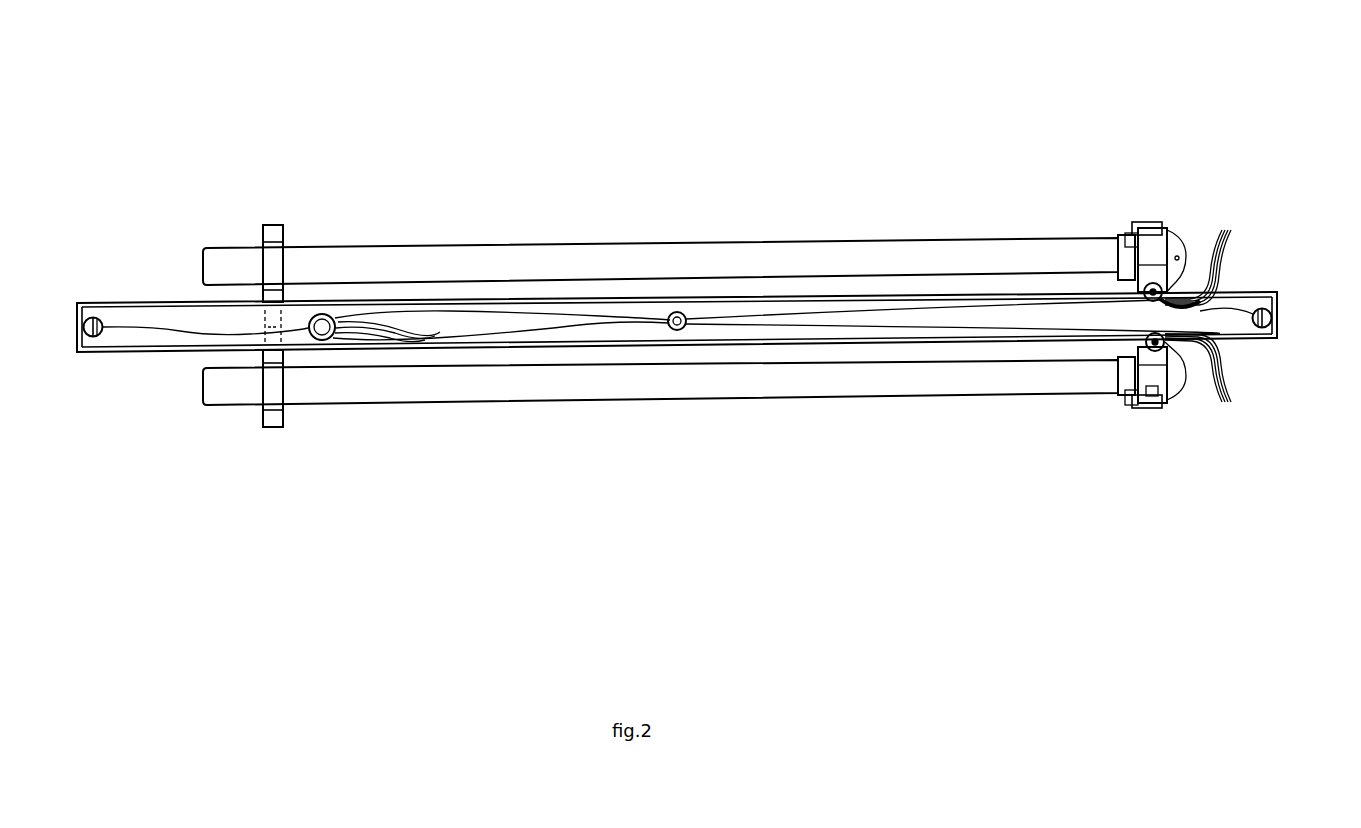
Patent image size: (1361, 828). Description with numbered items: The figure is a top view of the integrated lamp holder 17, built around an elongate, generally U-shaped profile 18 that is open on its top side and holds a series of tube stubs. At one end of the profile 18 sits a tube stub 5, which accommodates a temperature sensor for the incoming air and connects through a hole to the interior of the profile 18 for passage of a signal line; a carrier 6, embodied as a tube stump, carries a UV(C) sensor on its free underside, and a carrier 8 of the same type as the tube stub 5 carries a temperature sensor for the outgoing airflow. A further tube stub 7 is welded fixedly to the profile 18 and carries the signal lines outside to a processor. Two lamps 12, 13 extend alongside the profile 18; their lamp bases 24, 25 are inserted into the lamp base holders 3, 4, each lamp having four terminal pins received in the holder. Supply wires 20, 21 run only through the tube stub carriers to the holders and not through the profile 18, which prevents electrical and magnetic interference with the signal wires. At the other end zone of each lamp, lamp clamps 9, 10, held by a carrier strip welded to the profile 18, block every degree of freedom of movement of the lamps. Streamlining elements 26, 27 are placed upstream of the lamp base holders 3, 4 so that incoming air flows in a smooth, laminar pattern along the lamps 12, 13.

The lamp base holder 3 is at (1145, 404).
The lamp base holder 4 is at (1150, 238).
The tube stub 5 is at (1272, 318).
The carrier 6 is at (668, 312).
The tube stub 7 is at (325, 318).
The carrier 8 is at (98, 300).
The lamp clamp 9 is at (270, 420).
The lamp clamp 10 is at (270, 232).
The lamp 12 is at (348, 390).
The lamp 13 is at (345, 255).
The lamp holder 17 is at (545, 195).
The U-shaped profile 18 is at (762, 300).
The supply wires 20 is at (1228, 400).
The wires 21 is at (1228, 236).
The lamp base 24 is at (1127, 383).
The lamp base 25 is at (1122, 234).
The streamlining element 26 is at (1178, 387).
The streamlining element 27 is at (1182, 244).